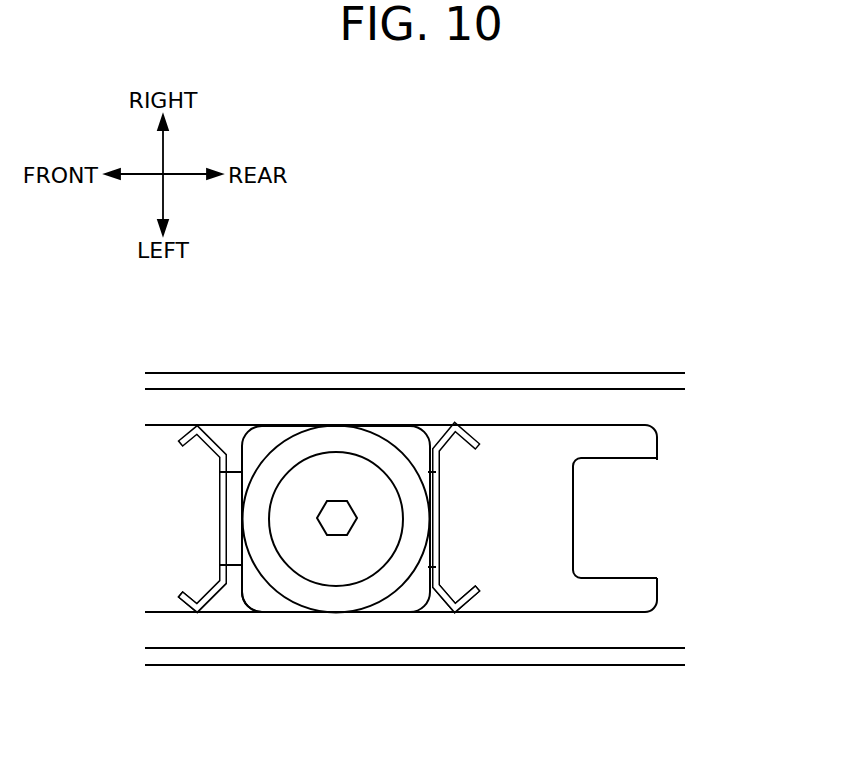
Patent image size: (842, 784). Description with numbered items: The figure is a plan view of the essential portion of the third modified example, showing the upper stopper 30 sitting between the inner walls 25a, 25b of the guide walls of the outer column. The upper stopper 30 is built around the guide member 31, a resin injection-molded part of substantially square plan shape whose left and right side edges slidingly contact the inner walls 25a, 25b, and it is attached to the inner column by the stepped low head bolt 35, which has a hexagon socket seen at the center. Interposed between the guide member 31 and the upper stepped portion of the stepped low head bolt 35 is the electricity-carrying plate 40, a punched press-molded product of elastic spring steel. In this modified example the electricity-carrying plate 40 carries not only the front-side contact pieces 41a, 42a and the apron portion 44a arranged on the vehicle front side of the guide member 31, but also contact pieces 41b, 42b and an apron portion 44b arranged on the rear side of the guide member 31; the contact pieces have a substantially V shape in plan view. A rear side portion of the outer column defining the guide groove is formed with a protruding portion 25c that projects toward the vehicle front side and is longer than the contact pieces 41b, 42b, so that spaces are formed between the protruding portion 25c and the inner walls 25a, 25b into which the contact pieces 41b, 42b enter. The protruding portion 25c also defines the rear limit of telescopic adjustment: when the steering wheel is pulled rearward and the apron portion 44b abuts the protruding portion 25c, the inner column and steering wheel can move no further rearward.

The inner wall 25a is at (578, 612).
The inner wall 25b is at (555, 425).
The protruding portion 25c is at (630, 505).
The upper stopper 30 is at (242, 438).
The guide member 31 is at (260, 598).
The stepped low head bolt 35 is at (328, 450).
The electricity-carrying plate 40 is at (400, 438).
The contact piece 41a is at (178, 602).
The contact piece 41b is at (446, 604).
The contact piece 42a is at (178, 441).
The contact piece 42b is at (452, 424).
The apron portion 44a is at (220, 519).
The apron portion 44b is at (438, 518).